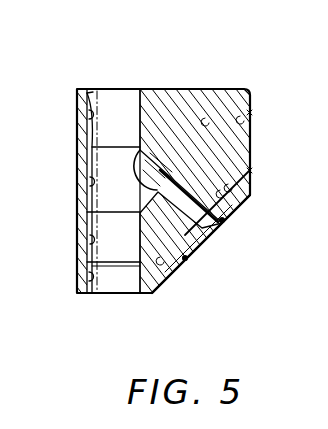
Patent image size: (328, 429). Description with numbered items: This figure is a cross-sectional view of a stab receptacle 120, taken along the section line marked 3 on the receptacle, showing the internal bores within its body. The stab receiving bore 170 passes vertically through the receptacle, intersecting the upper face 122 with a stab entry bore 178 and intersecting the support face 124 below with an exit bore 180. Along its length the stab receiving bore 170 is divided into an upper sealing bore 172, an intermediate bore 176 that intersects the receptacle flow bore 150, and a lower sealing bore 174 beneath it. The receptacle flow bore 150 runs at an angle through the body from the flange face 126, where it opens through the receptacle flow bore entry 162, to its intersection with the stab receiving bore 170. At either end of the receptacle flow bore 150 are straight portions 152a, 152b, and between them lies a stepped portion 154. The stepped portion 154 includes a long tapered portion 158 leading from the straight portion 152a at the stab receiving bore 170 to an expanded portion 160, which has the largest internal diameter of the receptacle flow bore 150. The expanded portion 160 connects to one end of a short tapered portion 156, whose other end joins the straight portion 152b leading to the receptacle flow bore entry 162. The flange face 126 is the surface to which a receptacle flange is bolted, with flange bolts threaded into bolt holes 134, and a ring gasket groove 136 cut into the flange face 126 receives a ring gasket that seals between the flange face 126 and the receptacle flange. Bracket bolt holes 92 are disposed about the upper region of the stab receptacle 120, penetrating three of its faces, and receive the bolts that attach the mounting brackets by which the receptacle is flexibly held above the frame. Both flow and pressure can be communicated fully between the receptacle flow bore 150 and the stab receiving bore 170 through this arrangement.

The stab receptacle 120 is at (243, 58).
The upper face 122 is at (204, 88).
The support face 124 is at (150, 291).
The flange face 126 is at (249, 199).
The bolt holes 134 is at (253, 171).
The ring gasket groove 136 is at (239, 212).
The receptacle flow bore 150 is at (193, 231).
The straight portion 152a is at (147, 166).
The straight portion 152b is at (186, 256).
The stepped portion 154 is at (161, 147).
The short tapered portion 156 is at (178, 197).
The long tapered portion 158 is at (140, 190).
The expanded portion 160 is at (153, 162).
The receptacle flow bore entry 162 is at (224, 222).
The stab receiving bore 170 is at (108, 80).
The upper sealing bore 172 is at (85, 109).
The lower sealing bore 174 is at (87, 240).
The intermediate bore 176 is at (87, 181).
The stab entry bore 178 is at (93, 92).
The exit bore 180 is at (87, 277).
The bracket bolt holes 92 is at (253, 113).
The section line 3 is at (314, 148).